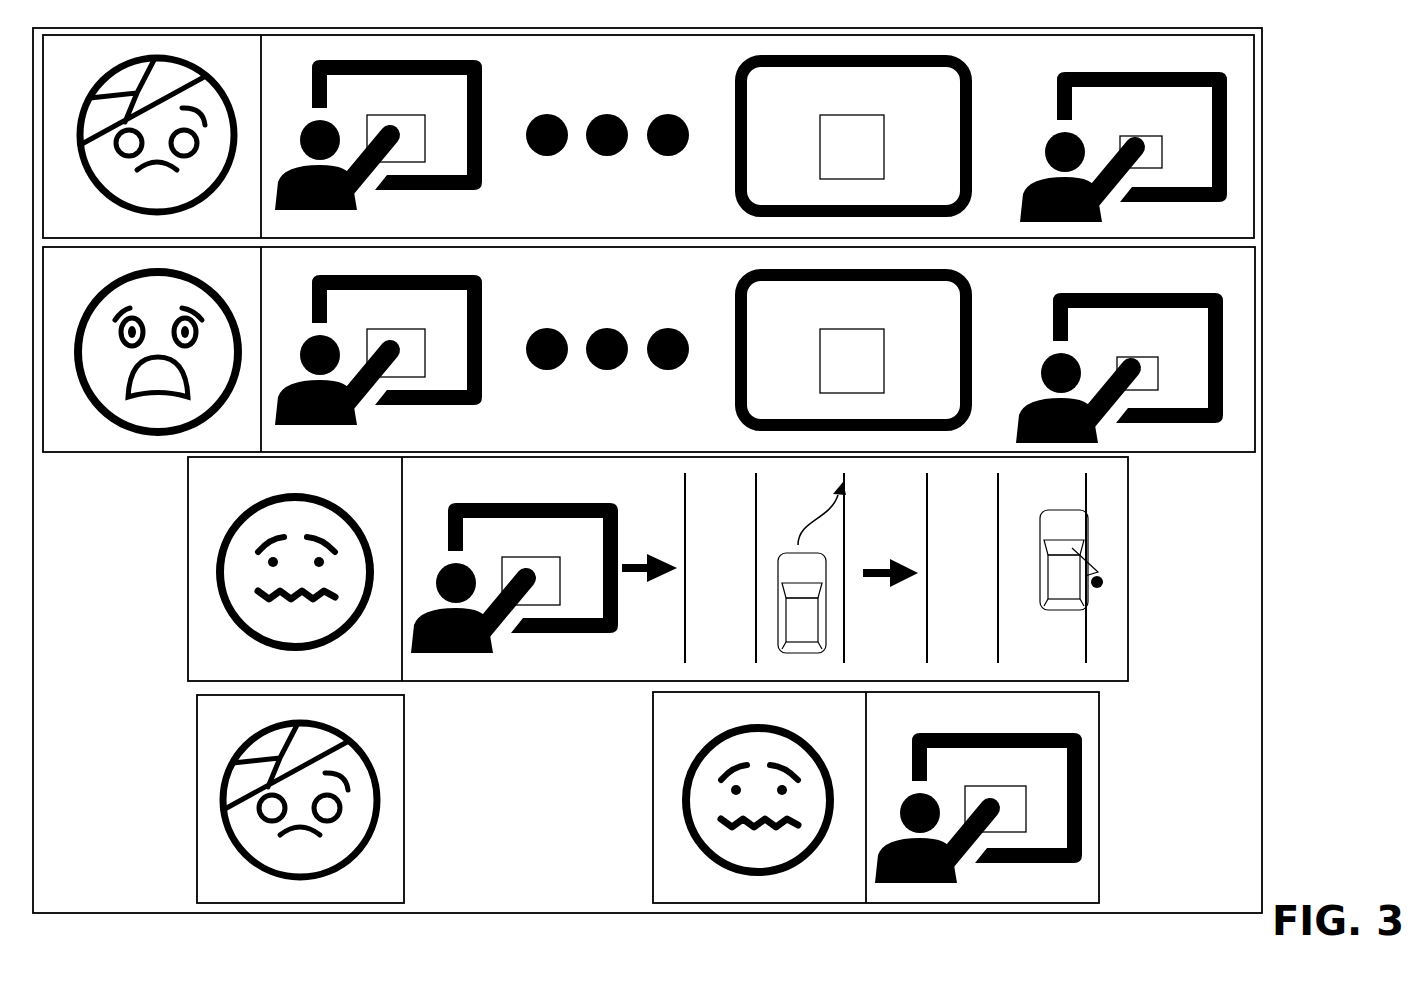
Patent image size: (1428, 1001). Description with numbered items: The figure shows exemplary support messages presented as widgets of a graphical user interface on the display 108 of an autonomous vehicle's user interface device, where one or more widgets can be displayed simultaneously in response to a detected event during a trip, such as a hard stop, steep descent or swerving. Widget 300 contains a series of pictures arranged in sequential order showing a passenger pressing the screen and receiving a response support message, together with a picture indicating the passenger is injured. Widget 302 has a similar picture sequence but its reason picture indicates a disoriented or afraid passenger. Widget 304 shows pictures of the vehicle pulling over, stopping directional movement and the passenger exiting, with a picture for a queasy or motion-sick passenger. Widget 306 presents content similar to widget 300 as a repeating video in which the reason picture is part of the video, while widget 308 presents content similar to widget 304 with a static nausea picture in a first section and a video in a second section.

The display 108 is at (1263, 722).
The widget 300 is at (1254, 152).
The widget 302 is at (1256, 368).
The widget 304 is at (1129, 600).
The widget 306 is at (405, 822).
The widget 308 is at (1100, 820).